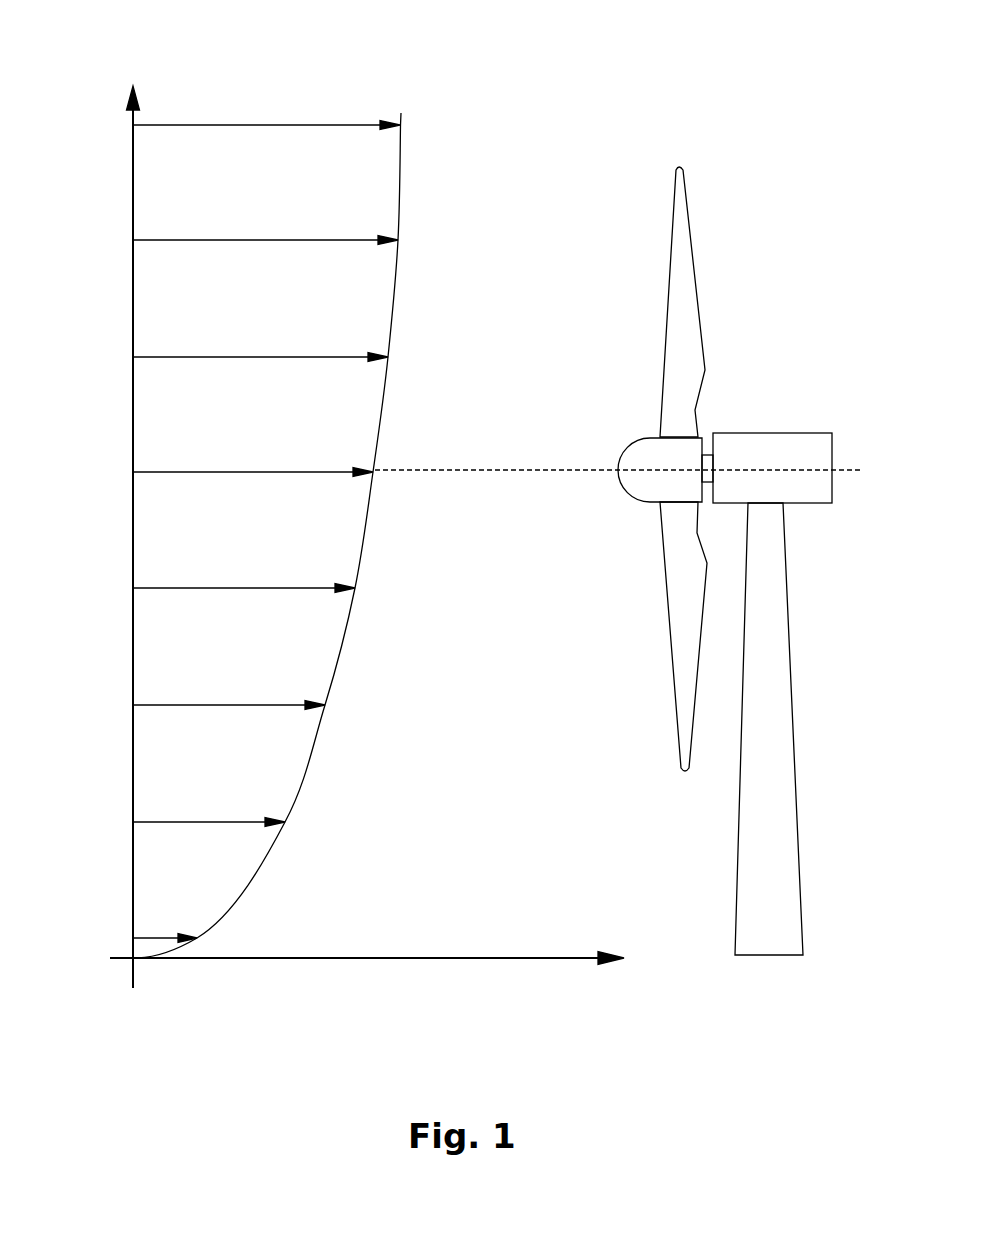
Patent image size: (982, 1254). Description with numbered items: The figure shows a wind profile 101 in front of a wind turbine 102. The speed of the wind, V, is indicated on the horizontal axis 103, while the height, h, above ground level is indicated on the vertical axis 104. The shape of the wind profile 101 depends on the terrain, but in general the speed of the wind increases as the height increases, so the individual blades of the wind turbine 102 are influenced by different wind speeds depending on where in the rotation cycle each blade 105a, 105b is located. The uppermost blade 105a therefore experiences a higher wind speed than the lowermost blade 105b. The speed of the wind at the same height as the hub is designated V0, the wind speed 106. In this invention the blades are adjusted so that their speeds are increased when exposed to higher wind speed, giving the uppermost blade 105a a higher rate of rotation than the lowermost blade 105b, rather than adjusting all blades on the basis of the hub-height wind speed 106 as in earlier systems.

The wind profile 101 is at (419, 84).
The wind turbine 102 is at (768, 448).
The horizontal axis 103 is at (593, 960).
The vertical axis 104 is at (131, 123).
The uppermost blade 105a is at (684, 268).
The lowermost blade 105b is at (688, 617).
The speed of the wind at hub height 106 is at (333, 443).